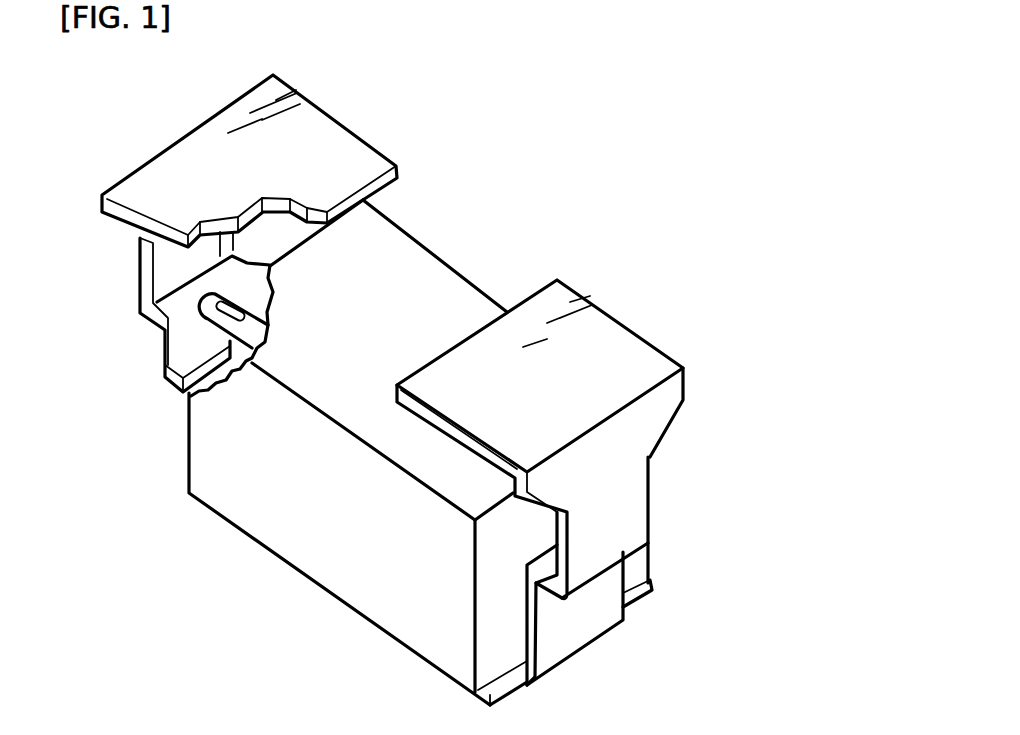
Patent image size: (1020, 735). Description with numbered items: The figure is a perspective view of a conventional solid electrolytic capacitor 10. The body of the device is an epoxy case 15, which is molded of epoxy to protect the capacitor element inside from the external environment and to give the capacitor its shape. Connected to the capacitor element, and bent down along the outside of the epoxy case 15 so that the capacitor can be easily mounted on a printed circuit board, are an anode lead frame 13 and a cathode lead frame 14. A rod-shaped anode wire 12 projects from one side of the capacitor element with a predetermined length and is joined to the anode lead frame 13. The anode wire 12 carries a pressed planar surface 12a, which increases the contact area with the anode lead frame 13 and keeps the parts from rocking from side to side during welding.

The solid electrolytic capacitor 10 is at (532, 181).
The anode wire 12 is at (250, 363).
The planar surface 12a is at (225, 292).
The anode lead frame 13 is at (188, 312).
The cathode lead frame 14 is at (577, 623).
The epoxy case 15 is at (320, 547).